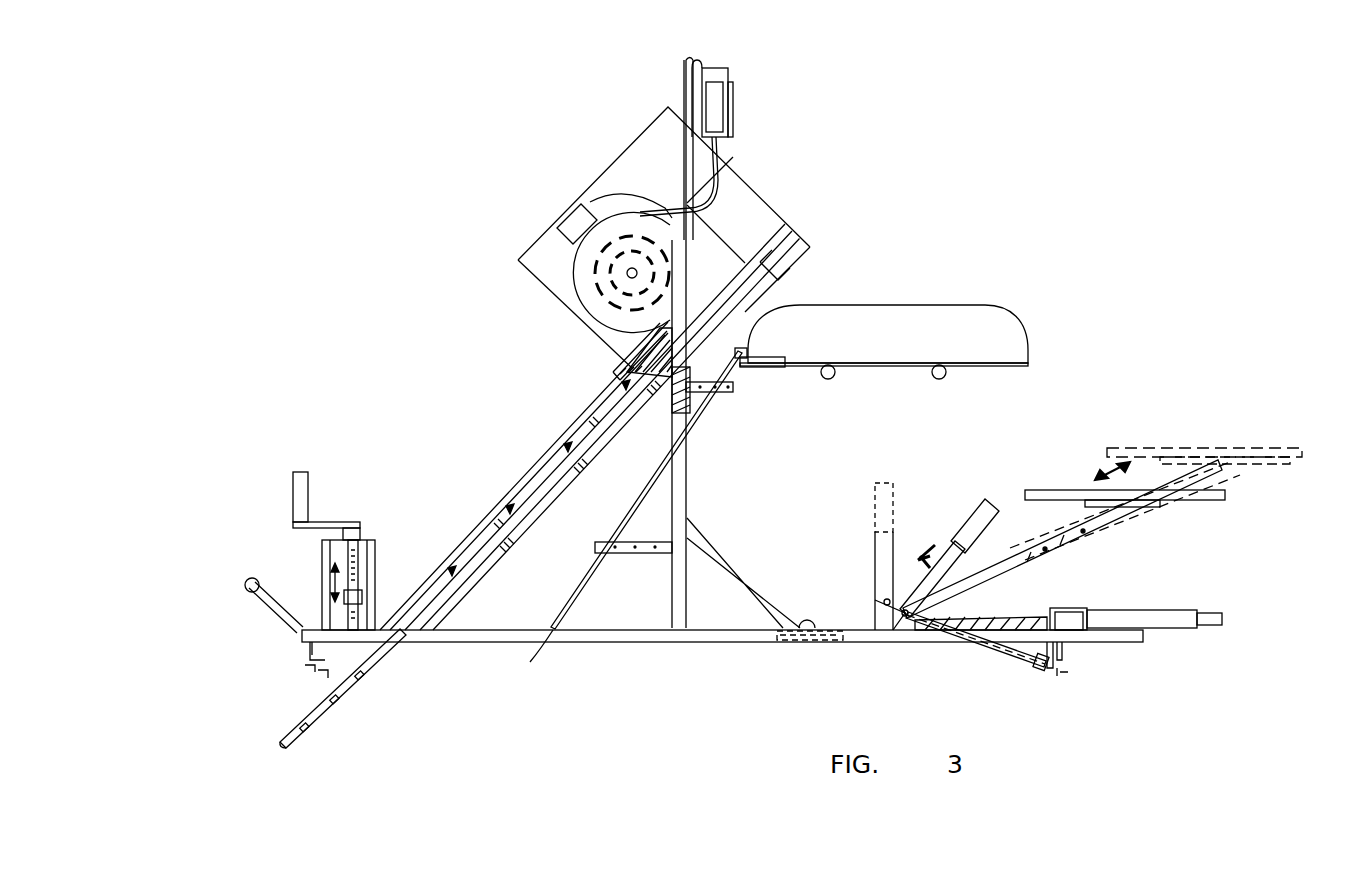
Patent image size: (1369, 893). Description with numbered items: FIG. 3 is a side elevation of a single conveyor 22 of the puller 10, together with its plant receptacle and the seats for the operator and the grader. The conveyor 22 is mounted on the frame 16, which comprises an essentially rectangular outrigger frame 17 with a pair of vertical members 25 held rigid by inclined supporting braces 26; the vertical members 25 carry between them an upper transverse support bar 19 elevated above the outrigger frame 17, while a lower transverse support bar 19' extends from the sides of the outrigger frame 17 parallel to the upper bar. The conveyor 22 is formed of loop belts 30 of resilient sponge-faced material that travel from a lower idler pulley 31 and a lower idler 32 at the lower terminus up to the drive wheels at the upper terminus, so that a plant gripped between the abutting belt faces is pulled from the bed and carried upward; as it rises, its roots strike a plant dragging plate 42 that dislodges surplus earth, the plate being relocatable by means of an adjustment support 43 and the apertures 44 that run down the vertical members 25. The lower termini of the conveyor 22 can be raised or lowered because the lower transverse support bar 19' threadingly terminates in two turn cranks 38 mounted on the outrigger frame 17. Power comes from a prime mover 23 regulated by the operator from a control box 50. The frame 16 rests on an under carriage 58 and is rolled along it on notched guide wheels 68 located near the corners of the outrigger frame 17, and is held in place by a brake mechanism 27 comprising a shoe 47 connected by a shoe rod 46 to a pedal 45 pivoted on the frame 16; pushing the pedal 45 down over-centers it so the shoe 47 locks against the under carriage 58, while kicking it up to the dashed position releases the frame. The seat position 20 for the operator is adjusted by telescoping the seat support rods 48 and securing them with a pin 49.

The puller 10 is at (868, 268).
The frame 16 is at (640, 362).
The outrigger frame 17 is at (245, 590).
The upper transverse support bar 19 is at (608, 370).
The lower transverse support bar 19' is at (379, 584).
The seat position 20 is at (1290, 460).
The conveyor 22 is at (473, 530).
The prime mover 23 is at (621, 278).
The vertical members 25 is at (678, 505).
The inclined supporting braces 26 is at (745, 578).
The brake mechanism 27 is at (815, 622).
The loop belts 30 is at (375, 655).
The lower idler pulley 31 is at (300, 740).
The lower idler 32 is at (296, 738).
The cranks 38 is at (305, 490).
The plant dragging plate 42 is at (593, 573).
The adjustment support 43 is at (655, 555).
The apertures 44 is at (690, 358).
The pedal 45 is at (1028, 357).
The shoe rod 46 is at (1017, 648).
The shoe 47 is at (1040, 672).
The seat support rods 48 is at (998, 583).
The pin 49 is at (1045, 553).
The control box 50 is at (742, 100).
The under carriage 58 is at (305, 668).
The notched guide wheels 68 is at (308, 628).